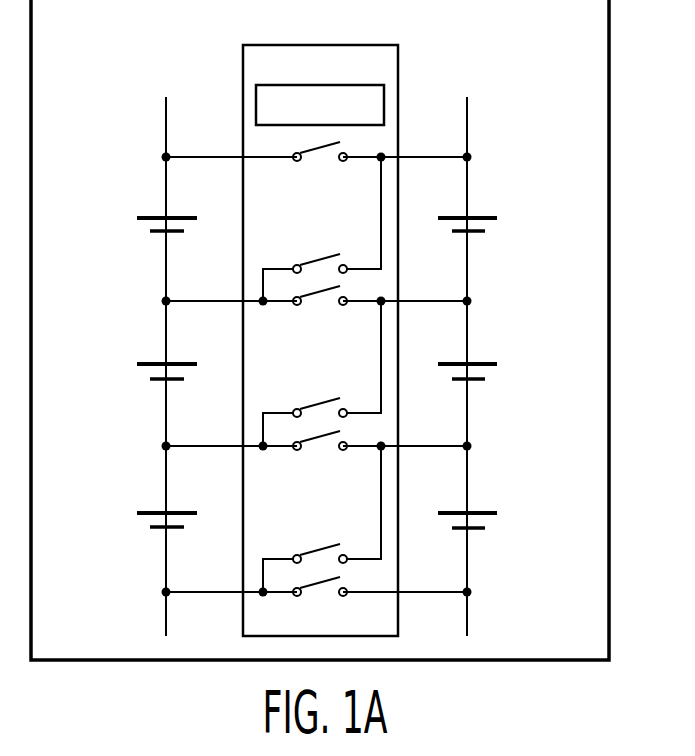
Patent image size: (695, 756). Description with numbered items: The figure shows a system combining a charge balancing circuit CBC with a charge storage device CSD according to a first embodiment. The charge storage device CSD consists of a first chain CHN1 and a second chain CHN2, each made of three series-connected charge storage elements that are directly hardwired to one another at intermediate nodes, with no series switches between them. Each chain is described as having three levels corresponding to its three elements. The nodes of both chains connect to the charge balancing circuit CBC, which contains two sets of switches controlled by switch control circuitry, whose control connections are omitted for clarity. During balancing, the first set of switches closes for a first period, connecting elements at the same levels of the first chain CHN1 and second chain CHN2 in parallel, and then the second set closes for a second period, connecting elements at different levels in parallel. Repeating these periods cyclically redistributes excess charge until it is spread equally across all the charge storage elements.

The charge storage device CSD is at (320, 330).
The charge balancing circuit CBC is at (320, 340).
The first chain CHN1 is at (165, 350).
The second chain CHN2 is at (467, 350).